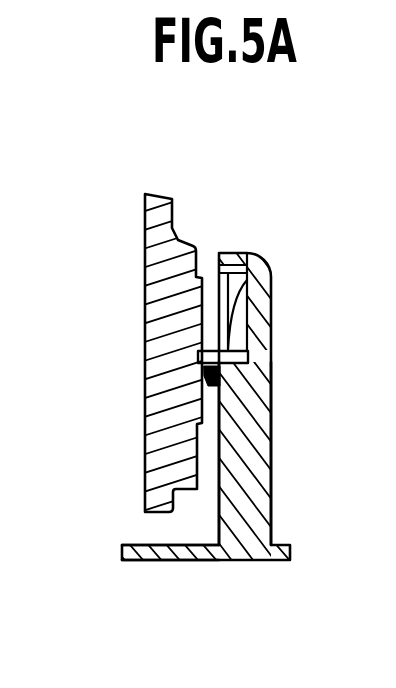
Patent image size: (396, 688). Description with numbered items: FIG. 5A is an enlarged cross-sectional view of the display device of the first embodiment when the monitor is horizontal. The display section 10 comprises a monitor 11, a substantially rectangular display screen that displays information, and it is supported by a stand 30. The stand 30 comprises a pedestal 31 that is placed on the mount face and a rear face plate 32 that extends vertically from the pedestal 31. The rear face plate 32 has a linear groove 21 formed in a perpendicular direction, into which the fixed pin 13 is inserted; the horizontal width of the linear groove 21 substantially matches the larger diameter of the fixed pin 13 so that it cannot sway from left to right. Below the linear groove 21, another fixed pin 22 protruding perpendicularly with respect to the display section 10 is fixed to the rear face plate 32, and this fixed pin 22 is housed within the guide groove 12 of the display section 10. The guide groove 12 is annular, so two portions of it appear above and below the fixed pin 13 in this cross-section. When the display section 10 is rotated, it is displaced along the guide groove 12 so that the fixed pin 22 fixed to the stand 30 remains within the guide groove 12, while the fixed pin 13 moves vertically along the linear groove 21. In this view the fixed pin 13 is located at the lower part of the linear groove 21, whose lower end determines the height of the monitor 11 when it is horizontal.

The display section 10 is at (152, 502).
The monitor 11 is at (150, 379).
The guide groove 12 is at (198, 378).
The fixed pin 13 is at (249, 298).
The linear groove 21 is at (248, 313).
The fixed pin 22 is at (209, 384).
The stand 30 is at (277, 557).
The pedestal 31 is at (150, 553).
The rear face plate 32 is at (271, 520).